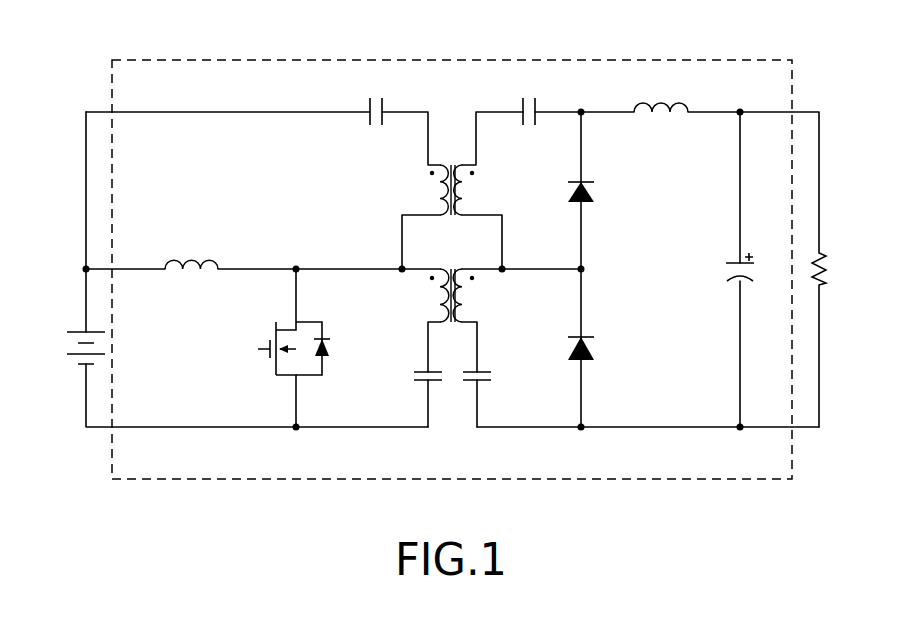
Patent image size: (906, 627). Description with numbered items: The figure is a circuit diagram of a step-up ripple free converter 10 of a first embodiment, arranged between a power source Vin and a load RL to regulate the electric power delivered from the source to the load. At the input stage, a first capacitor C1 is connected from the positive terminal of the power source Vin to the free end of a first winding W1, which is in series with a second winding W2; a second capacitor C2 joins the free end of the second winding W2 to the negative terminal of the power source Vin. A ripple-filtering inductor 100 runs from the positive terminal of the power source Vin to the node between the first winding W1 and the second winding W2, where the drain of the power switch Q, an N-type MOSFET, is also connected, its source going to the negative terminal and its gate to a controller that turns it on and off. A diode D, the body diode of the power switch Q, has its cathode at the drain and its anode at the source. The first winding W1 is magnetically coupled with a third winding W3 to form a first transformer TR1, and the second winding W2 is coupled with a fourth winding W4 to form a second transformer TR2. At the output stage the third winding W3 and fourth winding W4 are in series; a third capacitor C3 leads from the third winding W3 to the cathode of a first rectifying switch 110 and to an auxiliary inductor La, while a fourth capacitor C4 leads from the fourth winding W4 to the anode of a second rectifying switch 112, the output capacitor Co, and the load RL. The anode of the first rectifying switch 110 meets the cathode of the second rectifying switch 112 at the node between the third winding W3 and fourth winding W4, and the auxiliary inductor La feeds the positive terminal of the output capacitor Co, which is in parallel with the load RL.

The step-up ripple free converter 10 is at (452, 63).
The ripple-filtering inductor 100 is at (190, 262).
The first rectifying switch 110 is at (596, 185).
The second rectifying switch 112 is at (596, 345).
The power source Vin is at (65, 348).
The power switch Q is at (267, 348).
The diode D is at (323, 348).
The first capacitor C1 is at (376, 98).
The second capacitor C2 is at (412, 376).
The third capacitor C3 is at (530, 98).
The fourth capacitor C4 is at (492, 376).
The first transformer TR1 is at (452, 174).
The second transformer TR2 is at (452, 313).
The first winding W1 is at (433, 183).
The third winding W3 is at (470, 183).
The second winding W2 is at (433, 303).
The fourth winding W4 is at (470, 303).
The auxiliary inductor La is at (661, 92).
The output capacitor Co is at (724, 269).
The load RL is at (837, 270).